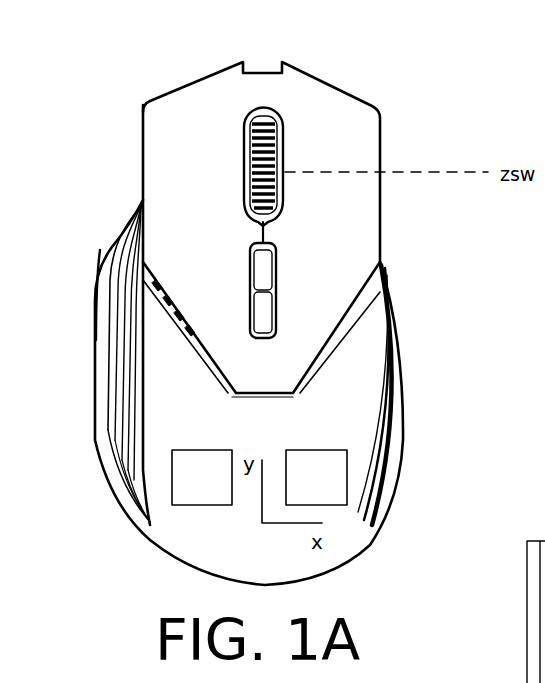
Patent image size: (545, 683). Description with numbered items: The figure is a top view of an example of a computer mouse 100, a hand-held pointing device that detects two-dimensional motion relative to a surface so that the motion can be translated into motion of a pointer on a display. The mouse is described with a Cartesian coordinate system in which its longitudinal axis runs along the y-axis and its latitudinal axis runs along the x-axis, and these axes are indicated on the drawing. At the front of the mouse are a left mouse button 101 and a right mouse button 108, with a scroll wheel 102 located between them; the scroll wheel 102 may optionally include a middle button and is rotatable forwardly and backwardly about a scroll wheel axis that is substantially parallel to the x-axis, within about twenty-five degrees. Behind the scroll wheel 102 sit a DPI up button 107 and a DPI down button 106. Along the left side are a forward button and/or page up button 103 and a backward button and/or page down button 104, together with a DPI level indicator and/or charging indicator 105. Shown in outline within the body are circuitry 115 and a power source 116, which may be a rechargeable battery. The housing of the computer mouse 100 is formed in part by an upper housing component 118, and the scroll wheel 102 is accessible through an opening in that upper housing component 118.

The computer mouse 100 is at (403, 46).
The left mouse button 101 is at (178, 134).
The scroll wheel 102 is at (262, 180).
The forward button and/or page up button 103 is at (142, 243).
The backward button and/or page down button 104 is at (142, 340).
The DPI level indicator and/or charging indicator 105 is at (172, 325).
The DPI down button 106 is at (277, 318).
The DPI up button 107 is at (277, 258).
The right mouse button 108 is at (340, 119).
The circuitry 115 is at (202, 477).
The power source 116 is at (316, 477).
The upper housing component 118 is at (400, 432).